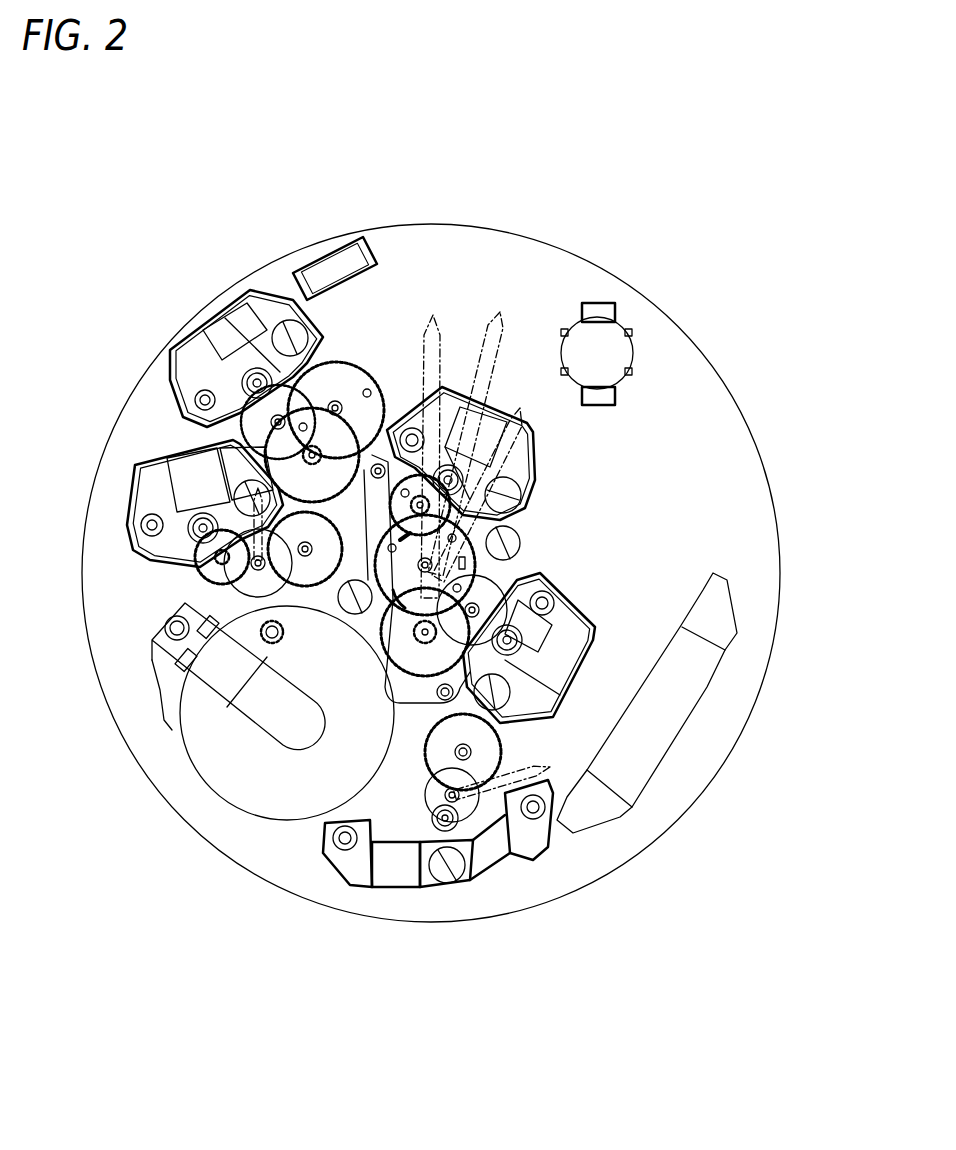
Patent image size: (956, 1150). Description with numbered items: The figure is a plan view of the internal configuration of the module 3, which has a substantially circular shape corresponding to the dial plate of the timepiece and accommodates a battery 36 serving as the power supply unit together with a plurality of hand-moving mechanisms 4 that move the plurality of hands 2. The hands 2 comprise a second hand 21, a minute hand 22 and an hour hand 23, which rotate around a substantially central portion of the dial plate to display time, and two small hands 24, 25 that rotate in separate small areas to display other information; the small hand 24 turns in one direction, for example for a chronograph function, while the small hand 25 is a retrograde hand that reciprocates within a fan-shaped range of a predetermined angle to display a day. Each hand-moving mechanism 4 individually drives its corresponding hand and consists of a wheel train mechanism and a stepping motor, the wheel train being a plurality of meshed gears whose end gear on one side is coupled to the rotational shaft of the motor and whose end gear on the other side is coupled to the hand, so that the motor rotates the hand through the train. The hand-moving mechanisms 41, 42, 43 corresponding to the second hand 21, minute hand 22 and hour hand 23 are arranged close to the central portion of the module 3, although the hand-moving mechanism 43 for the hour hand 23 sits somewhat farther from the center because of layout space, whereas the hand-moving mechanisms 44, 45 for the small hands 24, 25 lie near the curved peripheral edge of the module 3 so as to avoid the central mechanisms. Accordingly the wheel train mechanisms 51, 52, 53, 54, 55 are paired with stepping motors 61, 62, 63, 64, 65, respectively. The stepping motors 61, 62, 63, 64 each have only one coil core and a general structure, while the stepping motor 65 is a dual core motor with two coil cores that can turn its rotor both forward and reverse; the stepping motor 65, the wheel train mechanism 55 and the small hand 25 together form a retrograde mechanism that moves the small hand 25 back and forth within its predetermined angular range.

The hands 2 is at (371, 551).
The second hand 21 is at (498, 320).
The minute hand 22 is at (420, 350).
The hour hand 23 is at (517, 413).
The small hand 24 is at (166, 433).
The small hand 25 is at (550, 768).
The module 3 is at (178, 325).
The battery 36 is at (292, 797).
The hand-moving mechanisms 4 is at (457, 613).
The hand-moving mechanism 41 is at (822, 250).
The hand-moving mechanism 42 is at (808, 328).
The hand-moving mechanism 43 is at (263, 180).
The hand-moving mechanism 44 is at (140, 916).
The hand-moving mechanism 45 is at (406, 1045).
The wheel train mechanism 51 is at (482, 535).
The wheel train mechanism 52 is at (508, 575).
The wheel train mechanism 53 is at (350, 357).
The wheel train mechanism 54 is at (237, 607).
The wheel train mechanism 55 is at (422, 775).
The stepping motor 61 is at (537, 433).
The stepping motor 62 is at (585, 600).
The stepping motor 63 is at (223, 305).
The stepping motor 64 is at (157, 568).
The stepping motor 65 is at (443, 897).